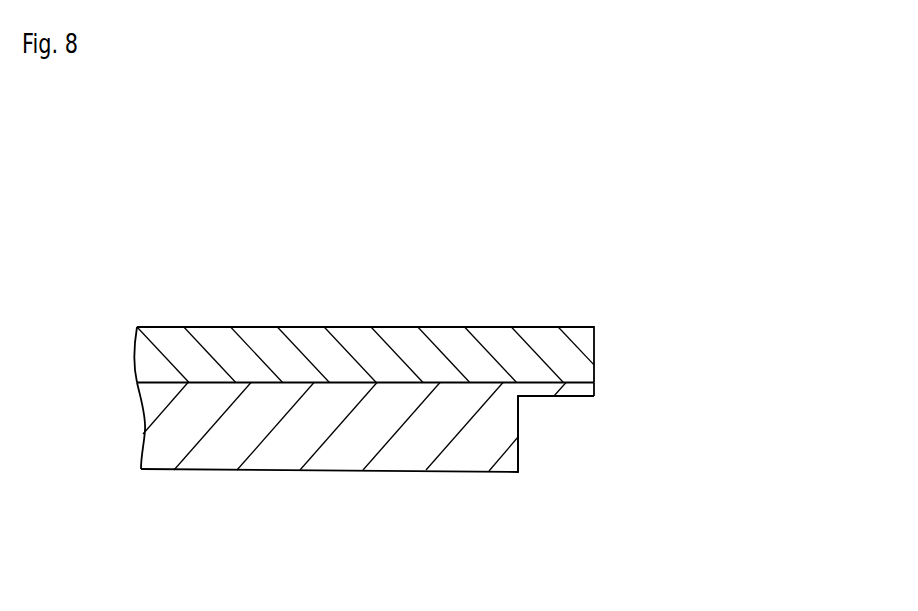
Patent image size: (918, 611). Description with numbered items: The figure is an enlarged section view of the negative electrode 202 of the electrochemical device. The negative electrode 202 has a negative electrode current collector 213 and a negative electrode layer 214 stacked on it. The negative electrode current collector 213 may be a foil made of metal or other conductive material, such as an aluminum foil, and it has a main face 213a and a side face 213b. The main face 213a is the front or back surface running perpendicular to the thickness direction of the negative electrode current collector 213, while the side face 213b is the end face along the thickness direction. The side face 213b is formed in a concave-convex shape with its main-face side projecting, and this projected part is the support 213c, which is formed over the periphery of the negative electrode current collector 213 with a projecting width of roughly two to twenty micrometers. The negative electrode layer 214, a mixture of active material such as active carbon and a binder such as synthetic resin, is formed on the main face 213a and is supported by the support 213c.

The negative electrode 202 is at (439, 360).
The negative electrode current collector 213 is at (375, 458).
The main face 213a is at (288, 384).
The side face 213b is at (594, 386).
The support 213c is at (522, 404).
The negative electrode layer 214 is at (452, 345).